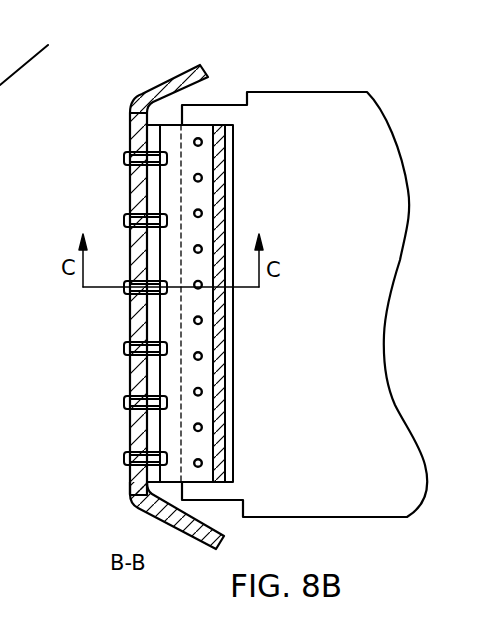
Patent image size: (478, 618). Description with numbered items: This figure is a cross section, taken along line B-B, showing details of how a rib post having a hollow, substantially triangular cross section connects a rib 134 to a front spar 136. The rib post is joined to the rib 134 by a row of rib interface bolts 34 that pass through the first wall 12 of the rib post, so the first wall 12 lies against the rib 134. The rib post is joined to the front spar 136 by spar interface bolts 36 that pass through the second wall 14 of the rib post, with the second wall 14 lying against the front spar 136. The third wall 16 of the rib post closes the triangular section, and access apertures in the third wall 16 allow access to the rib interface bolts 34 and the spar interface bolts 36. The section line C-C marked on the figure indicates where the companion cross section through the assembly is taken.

The first wall 12 is at (200, 378).
The second wall 14 is at (153, 437).
The third wall 16 is at (233, 422).
The rib interface bolts 34 is at (202, 142).
The spar interface bolts 36 is at (125, 457).
The rib 134 is at (323, 92).
The front spar 136 is at (130, 500).